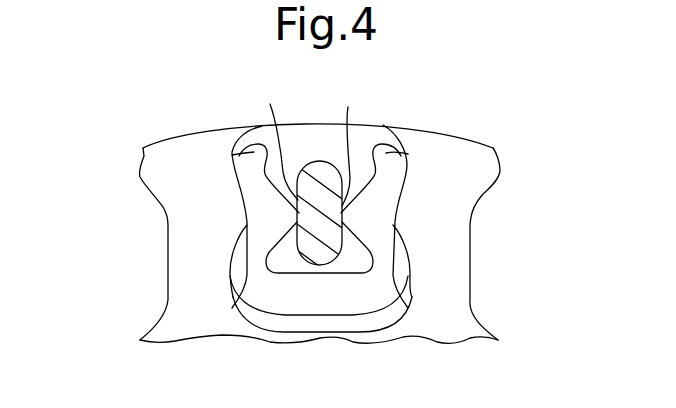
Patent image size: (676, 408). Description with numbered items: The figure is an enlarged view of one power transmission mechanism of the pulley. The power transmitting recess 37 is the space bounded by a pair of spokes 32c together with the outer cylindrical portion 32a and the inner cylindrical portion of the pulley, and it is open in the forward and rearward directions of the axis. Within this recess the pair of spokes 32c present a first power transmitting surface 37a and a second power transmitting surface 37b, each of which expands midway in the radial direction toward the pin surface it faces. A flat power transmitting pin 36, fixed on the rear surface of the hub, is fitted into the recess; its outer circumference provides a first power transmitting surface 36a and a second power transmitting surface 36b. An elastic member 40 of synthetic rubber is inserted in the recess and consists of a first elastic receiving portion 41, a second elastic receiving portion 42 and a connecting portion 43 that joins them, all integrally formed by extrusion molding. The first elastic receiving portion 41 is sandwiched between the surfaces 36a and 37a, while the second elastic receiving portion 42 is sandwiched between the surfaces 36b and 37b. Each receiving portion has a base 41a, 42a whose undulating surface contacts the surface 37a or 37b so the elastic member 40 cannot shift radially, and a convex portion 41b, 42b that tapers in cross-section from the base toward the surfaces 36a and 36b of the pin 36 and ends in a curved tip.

The outer cylindrical portion 32a is at (465, 140).
The spokes 32c is at (175, 247).
The power transmitting pin 36 is at (323, 176).
The first power transmitting surface 36a is at (274, 139).
The second power transmitting surface 36b is at (354, 144).
The power transmitting recess 37 is at (320, 317).
The first power transmitting surface 37a is at (233, 297).
The second power transmitting surface 37b is at (412, 297).
The elastic member 40 is at (360, 310).
The first elastic receiving portion 41 is at (262, 221).
The base 41a is at (233, 152).
The convex portion 41b is at (288, 209).
The second elastic receiving portion 42 is at (375, 215).
The base 42a is at (387, 144).
The convex portion 42b is at (350, 208).
The connecting portion 43 is at (283, 293).